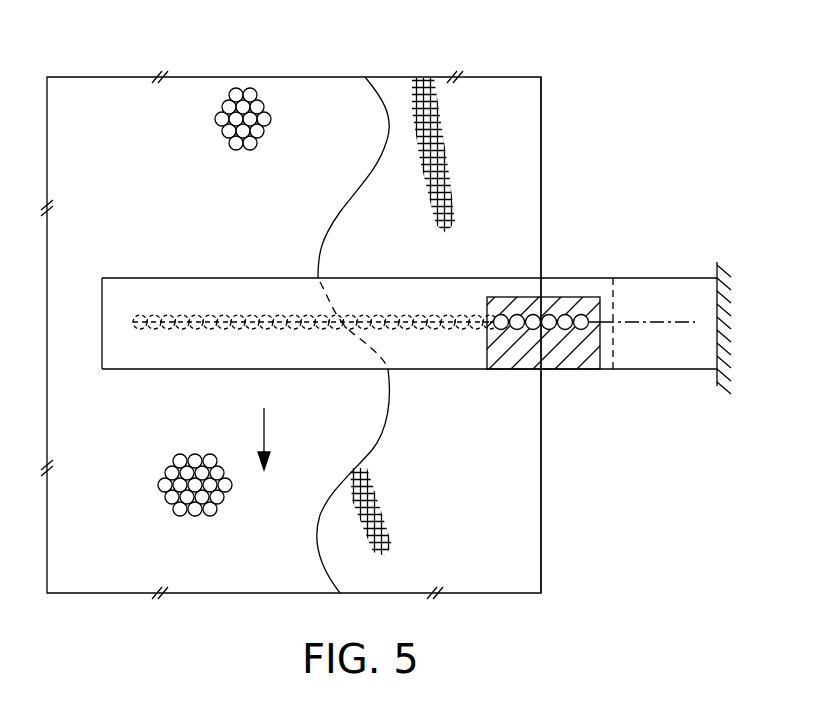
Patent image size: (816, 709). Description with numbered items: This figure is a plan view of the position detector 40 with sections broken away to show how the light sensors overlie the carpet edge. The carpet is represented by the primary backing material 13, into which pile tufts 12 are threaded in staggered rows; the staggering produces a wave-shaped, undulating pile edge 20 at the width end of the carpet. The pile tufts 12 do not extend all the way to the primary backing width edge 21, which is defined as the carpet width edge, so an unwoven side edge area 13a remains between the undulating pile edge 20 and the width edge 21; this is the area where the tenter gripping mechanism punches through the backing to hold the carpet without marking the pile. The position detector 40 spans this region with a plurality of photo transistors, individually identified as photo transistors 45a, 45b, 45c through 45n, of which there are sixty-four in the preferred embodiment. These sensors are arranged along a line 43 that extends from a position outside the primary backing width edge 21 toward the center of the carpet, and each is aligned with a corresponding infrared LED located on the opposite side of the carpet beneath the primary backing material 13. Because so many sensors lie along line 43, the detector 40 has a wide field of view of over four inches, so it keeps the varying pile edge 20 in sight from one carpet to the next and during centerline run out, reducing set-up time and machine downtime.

The pile tufts 12 is at (262, 105).
The primary backing material 13 is at (552, 480).
The unwoven side edge area 13a is at (512, 140).
The undulating pile edge 20 is at (382, 93).
The primary backing width edge 21 is at (542, 141).
The position detector 40 is at (657, 265).
The line 43 is at (675, 322).
The photo transistor 45a is at (580, 316).
The photo transistor 45b is at (567, 324).
The photo transistor 45c is at (550, 325).
The photo transistor 45n is at (145, 316).